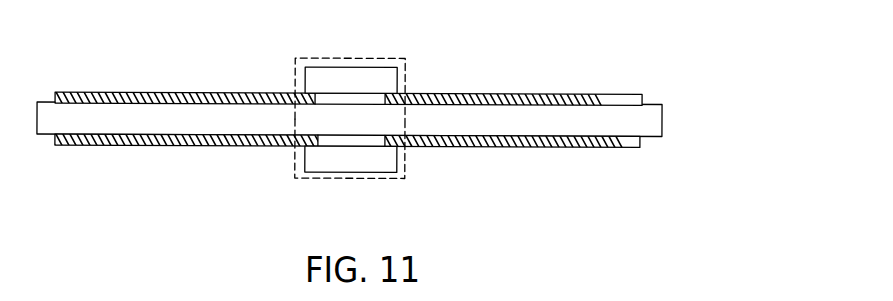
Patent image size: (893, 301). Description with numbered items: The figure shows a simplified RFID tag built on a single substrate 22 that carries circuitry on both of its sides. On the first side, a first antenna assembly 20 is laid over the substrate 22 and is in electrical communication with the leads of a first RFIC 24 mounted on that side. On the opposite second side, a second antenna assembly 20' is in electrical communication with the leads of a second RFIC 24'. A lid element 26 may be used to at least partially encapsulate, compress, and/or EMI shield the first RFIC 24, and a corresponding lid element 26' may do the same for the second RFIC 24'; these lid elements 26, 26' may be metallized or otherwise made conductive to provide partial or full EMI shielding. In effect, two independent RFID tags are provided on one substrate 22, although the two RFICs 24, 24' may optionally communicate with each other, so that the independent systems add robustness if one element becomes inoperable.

The first antenna assembly 20 is at (329, 74).
The second antenna assembly 20' is at (322, 166).
The core substrate 22 is at (662, 118).
The first RFIC 24 is at (397, 63).
The second RFIC 24' is at (416, 168).
The lid element 26 is at (320, 62).
The lid element 26' is at (316, 173).